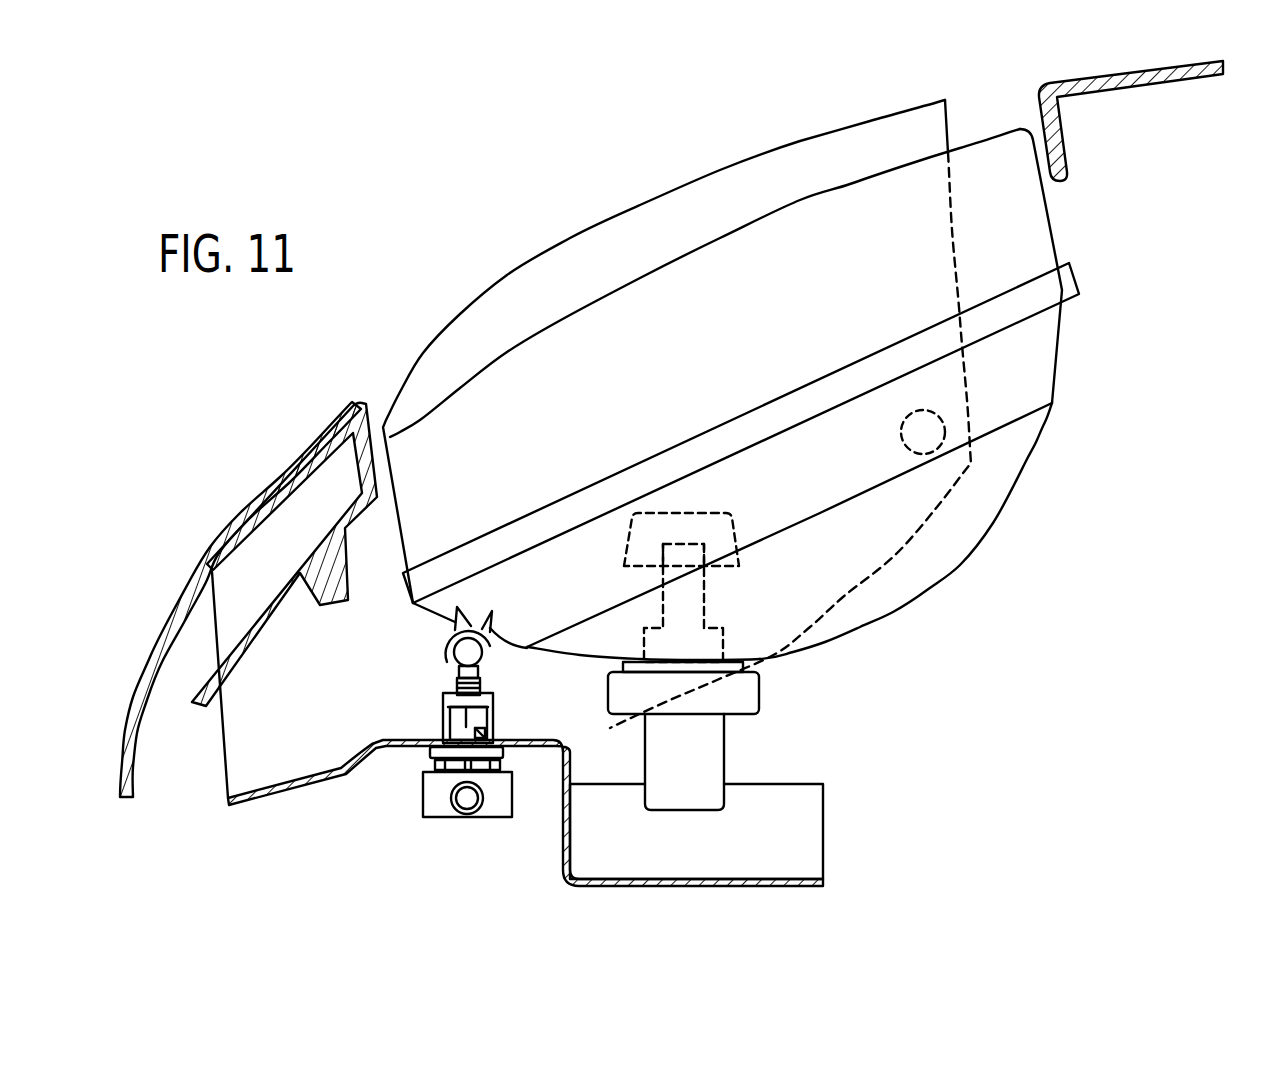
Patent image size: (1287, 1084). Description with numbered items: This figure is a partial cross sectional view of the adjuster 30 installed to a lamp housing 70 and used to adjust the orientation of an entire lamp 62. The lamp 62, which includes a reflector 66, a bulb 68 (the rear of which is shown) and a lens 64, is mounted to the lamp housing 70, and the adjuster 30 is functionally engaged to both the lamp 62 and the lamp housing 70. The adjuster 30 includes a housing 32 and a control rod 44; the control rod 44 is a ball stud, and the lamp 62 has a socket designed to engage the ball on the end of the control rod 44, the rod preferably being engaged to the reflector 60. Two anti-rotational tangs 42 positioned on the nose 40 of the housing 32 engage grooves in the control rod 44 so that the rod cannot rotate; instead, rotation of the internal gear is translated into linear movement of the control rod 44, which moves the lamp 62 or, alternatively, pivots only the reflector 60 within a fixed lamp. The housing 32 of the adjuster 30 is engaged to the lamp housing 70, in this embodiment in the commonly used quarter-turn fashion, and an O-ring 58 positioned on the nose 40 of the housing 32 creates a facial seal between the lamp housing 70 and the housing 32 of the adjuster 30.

The adjuster 30 is at (1117, 682).
The housing 32 is at (513, 818).
The nose 40 is at (398, 743).
The anti-rotational tang 42 is at (441, 697).
The control rod 44 is at (450, 684).
The O-ring 58 is at (422, 758).
The reflector 60 is at (474, 655).
The lamp 62 is at (1063, 344).
The lens 64 is at (993, 132).
The reflector 66 is at (602, 638).
The bulb 68 is at (728, 752).
The lamp housing 70 is at (1168, 78).